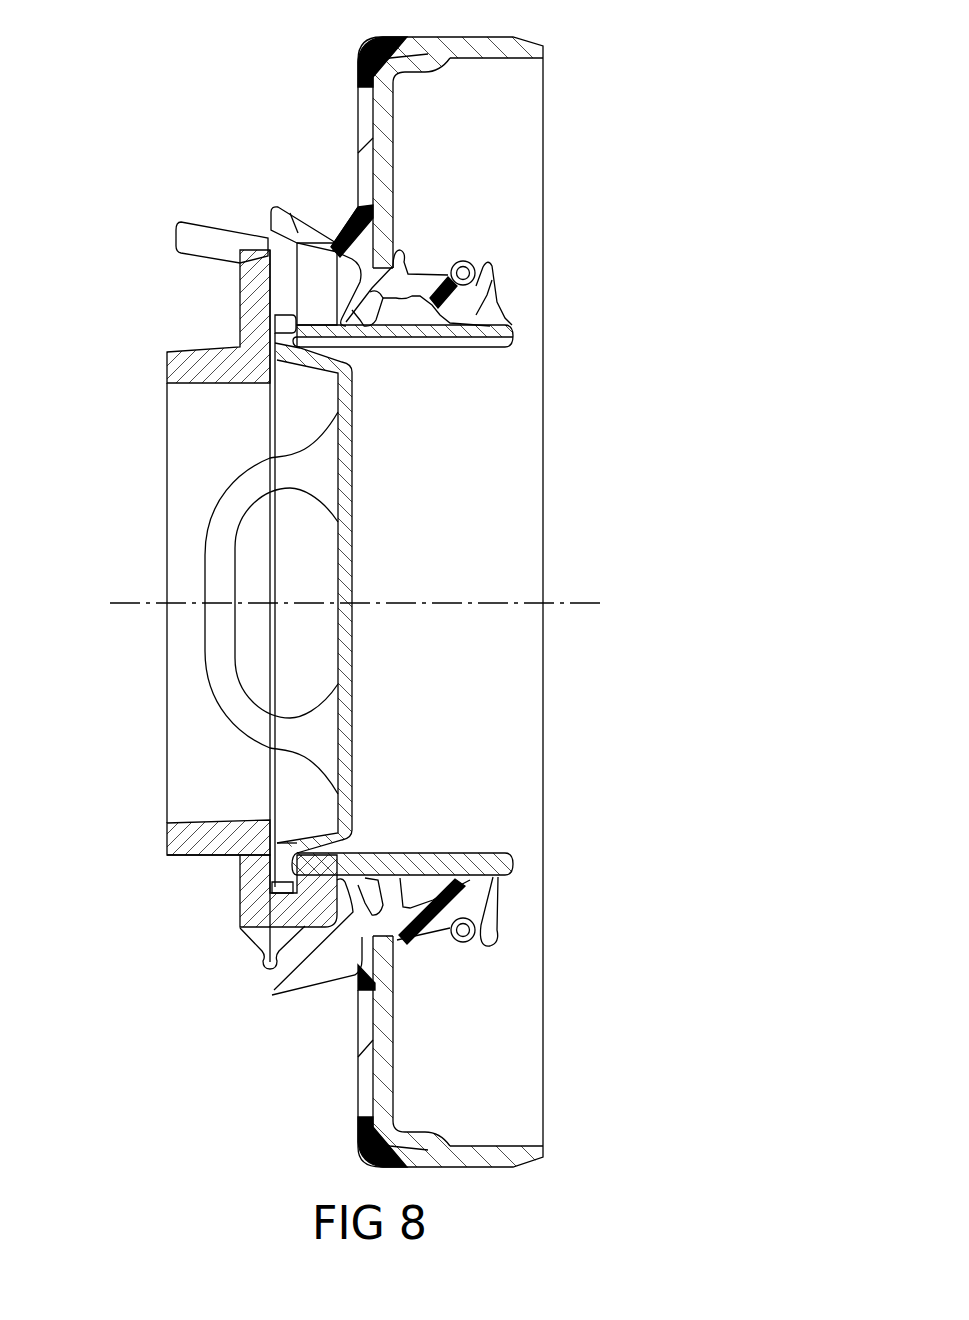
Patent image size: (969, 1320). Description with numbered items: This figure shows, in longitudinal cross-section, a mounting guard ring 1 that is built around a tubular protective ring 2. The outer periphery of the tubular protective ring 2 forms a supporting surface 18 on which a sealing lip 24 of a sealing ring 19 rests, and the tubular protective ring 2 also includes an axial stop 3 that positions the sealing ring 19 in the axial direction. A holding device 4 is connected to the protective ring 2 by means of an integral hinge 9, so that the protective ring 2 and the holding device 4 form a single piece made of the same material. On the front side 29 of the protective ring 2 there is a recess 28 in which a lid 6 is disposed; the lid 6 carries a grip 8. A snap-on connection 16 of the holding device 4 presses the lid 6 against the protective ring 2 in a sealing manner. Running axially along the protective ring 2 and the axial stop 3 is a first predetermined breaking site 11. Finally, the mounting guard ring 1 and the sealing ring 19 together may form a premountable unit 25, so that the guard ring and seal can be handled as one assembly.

The mounting guard ring 1 is at (128, 720).
The tubular protective ring 2 is at (487, 860).
The axial stop 3 is at (290, 912).
The holding device 4 is at (192, 366).
The lid 6 is at (345, 637).
The grip 8 is at (215, 577).
The integral hinge 9 is at (268, 966).
The first predetermined breaking site 11 is at (312, 270).
The snap-on connection 16 is at (162, 232).
The supporting surface 18 is at (505, 322).
The sealing ring 19 is at (480, 44).
The sealing lip 24 is at (493, 290).
The premountable unit 25 is at (508, 878).
The recess 28 is at (283, 892).
The front side 29 is at (278, 330).